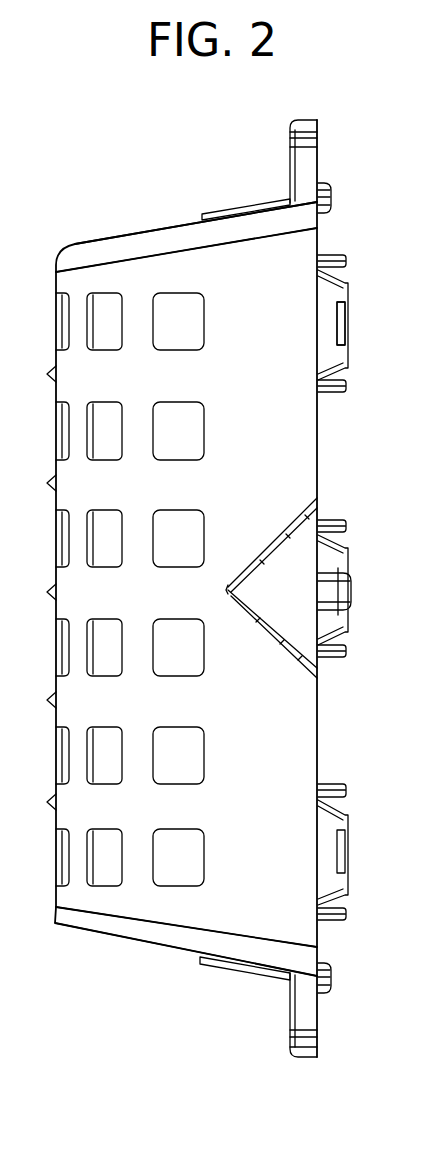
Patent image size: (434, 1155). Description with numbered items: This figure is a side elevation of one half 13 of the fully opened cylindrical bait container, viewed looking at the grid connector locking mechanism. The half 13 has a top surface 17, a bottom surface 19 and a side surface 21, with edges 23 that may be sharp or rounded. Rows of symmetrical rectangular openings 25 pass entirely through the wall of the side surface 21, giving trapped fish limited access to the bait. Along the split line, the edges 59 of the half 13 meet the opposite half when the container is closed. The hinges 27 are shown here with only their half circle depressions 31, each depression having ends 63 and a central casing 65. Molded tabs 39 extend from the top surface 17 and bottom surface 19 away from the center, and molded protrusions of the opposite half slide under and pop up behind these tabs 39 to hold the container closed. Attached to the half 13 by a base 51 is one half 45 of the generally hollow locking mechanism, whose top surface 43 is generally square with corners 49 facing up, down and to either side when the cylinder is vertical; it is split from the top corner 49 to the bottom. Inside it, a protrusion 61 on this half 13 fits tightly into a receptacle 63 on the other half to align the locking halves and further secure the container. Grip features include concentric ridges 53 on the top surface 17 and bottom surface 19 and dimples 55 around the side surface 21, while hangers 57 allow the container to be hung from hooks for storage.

The half 13 is at (173, 963).
The top surface 17 is at (120, 237).
The bottom surface 19 is at (192, 958).
The side surface 21 is at (158, 897).
The edges 23 is at (185, 237).
The openings 25 is at (160, 878).
The hinges 27 is at (363, 837).
The half circle depressions 31 is at (348, 292).
The molded tabs 39 is at (331, 196).
The top surface 43 is at (320, 523).
The half of locking mechanism 45 is at (250, 640).
The corners 49 is at (227, 588).
The base 51 is at (268, 530).
The concentric ridges 53 is at (247, 207).
The dimples 55 is at (53, 802).
The hangers 57 is at (318, 140).
The edges 59 is at (318, 722).
The protrusion 61 is at (350, 590).
The receptacle 63 is at (342, 255).
The central casings 65 is at (338, 355).